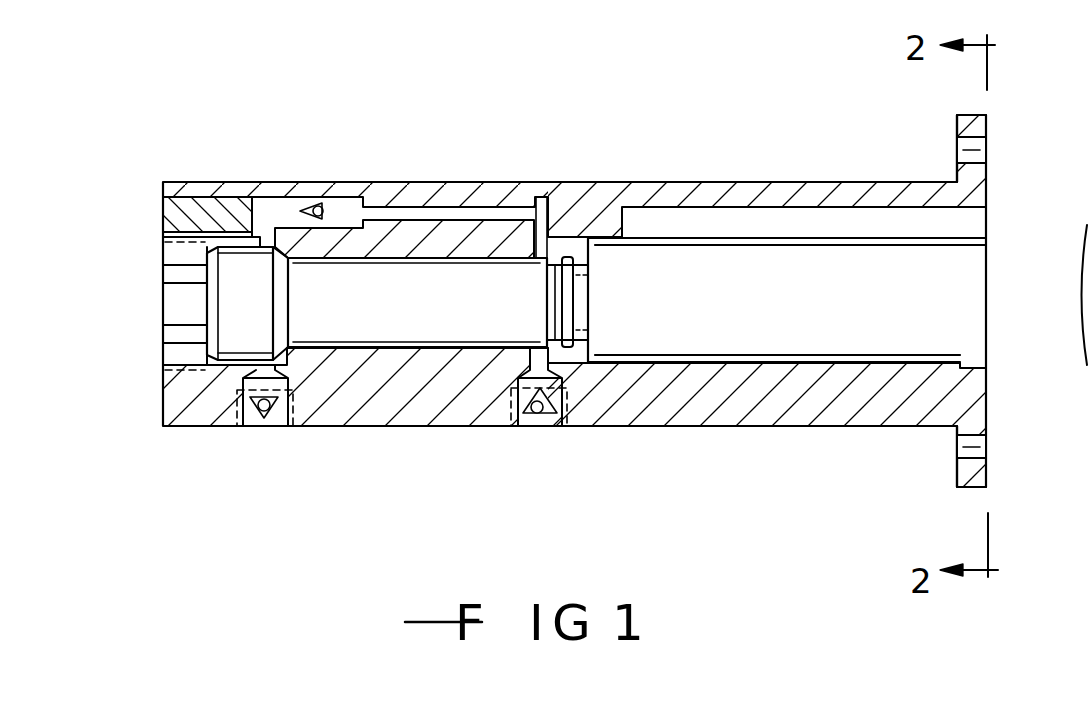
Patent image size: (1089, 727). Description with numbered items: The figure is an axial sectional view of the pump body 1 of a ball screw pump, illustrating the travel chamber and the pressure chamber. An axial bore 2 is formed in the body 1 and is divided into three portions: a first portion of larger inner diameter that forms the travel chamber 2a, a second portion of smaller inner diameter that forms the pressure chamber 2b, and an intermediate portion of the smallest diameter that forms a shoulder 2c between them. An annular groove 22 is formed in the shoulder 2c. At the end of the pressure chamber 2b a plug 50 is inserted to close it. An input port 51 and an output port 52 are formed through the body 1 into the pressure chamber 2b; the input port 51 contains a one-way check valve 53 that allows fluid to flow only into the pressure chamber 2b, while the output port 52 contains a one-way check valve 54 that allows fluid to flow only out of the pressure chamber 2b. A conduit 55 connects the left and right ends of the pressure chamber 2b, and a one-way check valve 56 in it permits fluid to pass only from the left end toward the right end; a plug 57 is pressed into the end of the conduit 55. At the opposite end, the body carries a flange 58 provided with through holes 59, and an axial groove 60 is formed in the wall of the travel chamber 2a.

The pump body 1 is at (598, 213).
The axial bore 2 is at (621, 288).
The travel chamber 2a is at (797, 320).
The pressure chamber 2b is at (428, 320).
The shoulder 2c is at (583, 337).
The annular groove 22 is at (567, 253).
The plug 50 is at (173, 305).
The input port 51 is at (277, 417).
The output port 52 is at (552, 417).
The one-way check valve 53 is at (257, 413).
The one-way check valve 54 is at (528, 412).
The conduit 55 is at (444, 218).
The one-way check valve 56 is at (318, 205).
The plug 57 is at (160, 220).
The flange 58 is at (978, 128).
The through holes 59 is at (978, 148).
The axial groove 60 is at (967, 222).